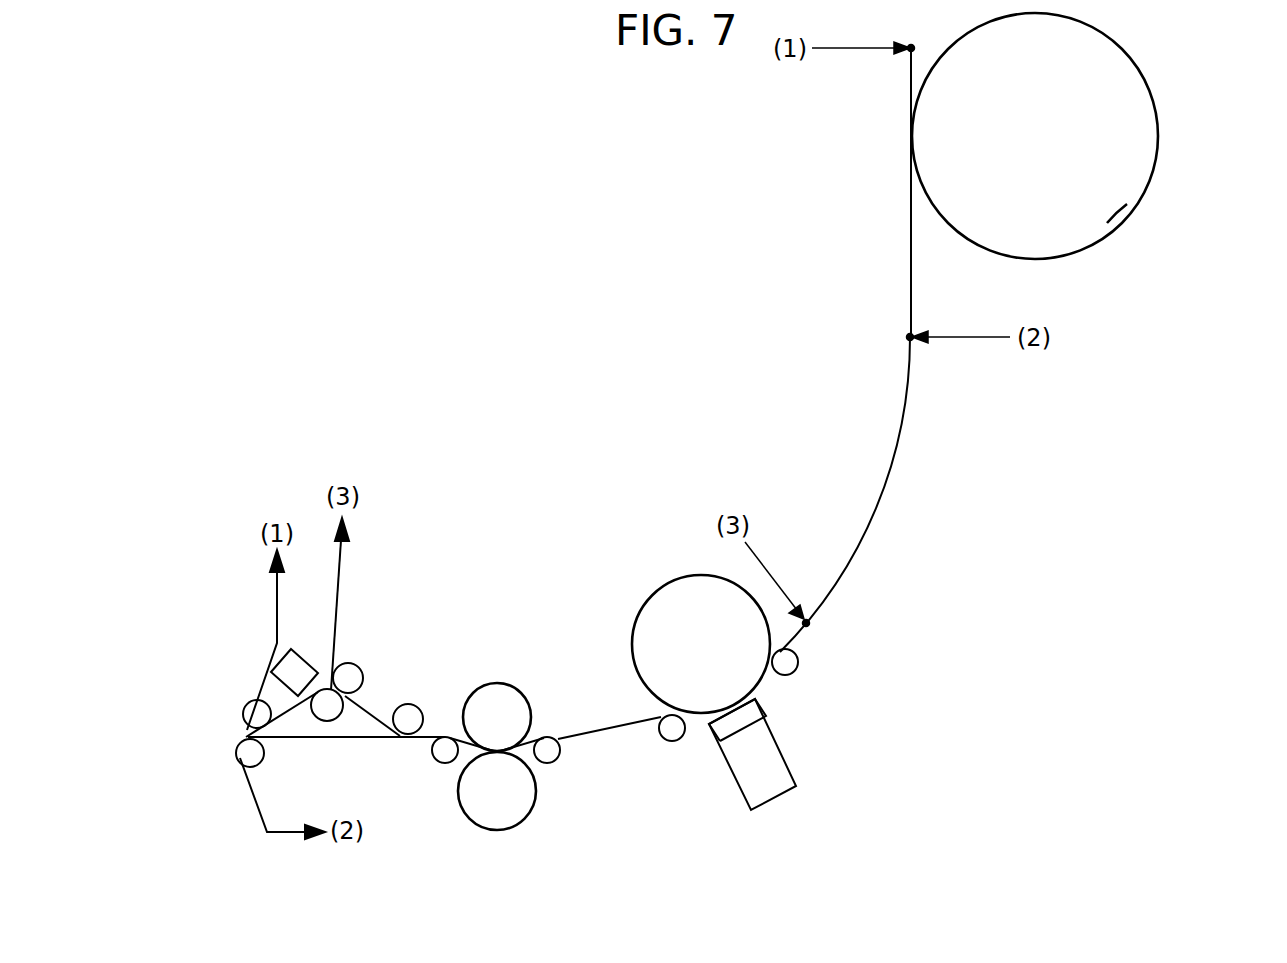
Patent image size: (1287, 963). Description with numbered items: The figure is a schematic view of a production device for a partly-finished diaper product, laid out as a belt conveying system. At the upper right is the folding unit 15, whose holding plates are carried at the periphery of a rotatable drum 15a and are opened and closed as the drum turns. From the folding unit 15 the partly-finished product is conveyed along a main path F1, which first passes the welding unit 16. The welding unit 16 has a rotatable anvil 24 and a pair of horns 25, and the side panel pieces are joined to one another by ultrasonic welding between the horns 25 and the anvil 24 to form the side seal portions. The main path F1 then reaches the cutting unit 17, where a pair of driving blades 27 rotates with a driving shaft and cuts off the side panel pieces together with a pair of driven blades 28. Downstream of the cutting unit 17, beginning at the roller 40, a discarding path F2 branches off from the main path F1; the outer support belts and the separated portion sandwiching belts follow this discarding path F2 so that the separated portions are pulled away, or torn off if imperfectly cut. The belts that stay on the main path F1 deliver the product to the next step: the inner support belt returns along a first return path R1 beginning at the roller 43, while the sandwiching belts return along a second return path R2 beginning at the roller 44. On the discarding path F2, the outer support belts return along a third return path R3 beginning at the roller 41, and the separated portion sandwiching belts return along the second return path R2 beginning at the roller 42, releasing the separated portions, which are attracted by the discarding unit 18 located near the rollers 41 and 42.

The folding unit 15 is at (1187, 147).
The drum 15a is at (1115, 232).
The main path F1 is at (885, 480).
The anvil 24 is at (676, 597).
The horn 25 is at (752, 711).
The welding unit 16 is at (785, 822).
The driving blade 27 is at (508, 700).
The driven blade 28 is at (518, 800).
The cutting unit 17 is at (495, 852).
The discarding path F2 is at (368, 710).
The roller 40 is at (414, 714).
The roller 41 is at (352, 676).
The roller 42 is at (333, 712).
The roller 43 is at (249, 718).
The roller 44 is at (244, 750).
The discarding unit 18 is at (300, 665).
The first return path R1 is at (263, 677).
The second return path R2 is at (250, 797).
The third return path R3 is at (339, 640).